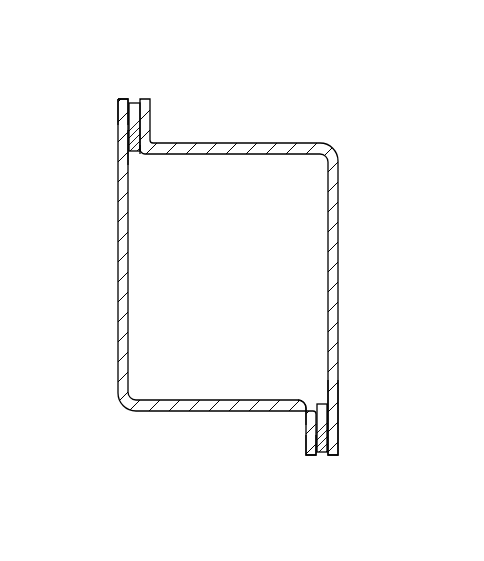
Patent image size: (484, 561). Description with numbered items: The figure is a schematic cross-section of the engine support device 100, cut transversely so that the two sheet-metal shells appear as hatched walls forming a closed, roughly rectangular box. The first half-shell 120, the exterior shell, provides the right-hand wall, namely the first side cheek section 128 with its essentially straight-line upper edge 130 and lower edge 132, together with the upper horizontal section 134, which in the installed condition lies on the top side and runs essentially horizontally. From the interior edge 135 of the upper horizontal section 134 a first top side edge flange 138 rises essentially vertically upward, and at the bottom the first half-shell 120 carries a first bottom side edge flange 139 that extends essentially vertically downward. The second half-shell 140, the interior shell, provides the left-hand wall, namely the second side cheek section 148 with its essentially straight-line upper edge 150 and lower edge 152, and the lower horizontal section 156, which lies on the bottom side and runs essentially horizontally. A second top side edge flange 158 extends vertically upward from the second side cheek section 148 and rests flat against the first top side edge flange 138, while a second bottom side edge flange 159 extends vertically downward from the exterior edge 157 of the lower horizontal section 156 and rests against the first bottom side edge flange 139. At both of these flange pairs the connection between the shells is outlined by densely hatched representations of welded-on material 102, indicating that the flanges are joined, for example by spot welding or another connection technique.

The engine support device 100 is at (170, 78).
The welded-on material 102 is at (133, 125).
The first half-shell 120 is at (341, 125).
The first side cheek section 128 is at (333, 290).
The upper edge 130 is at (337, 153).
The lower edge 132 is at (337, 405).
The upper horizontal section 134 is at (271, 143).
The interior edge 135 is at (143, 152).
The first top side edge flange 138 is at (149, 118).
The first bottom side edge flange 139 is at (322, 440).
The second half-shell 140 is at (115, 428).
The second side cheek section 148 is at (122, 289).
The upper edge 150 is at (127, 146).
The lower edge 152 is at (121, 400).
The lower horizontal section 156 is at (192, 405).
The exterior edge 157 is at (305, 413).
The second top side edge flange 158 is at (126, 116).
The second bottom side edge flange 159 is at (305, 447).